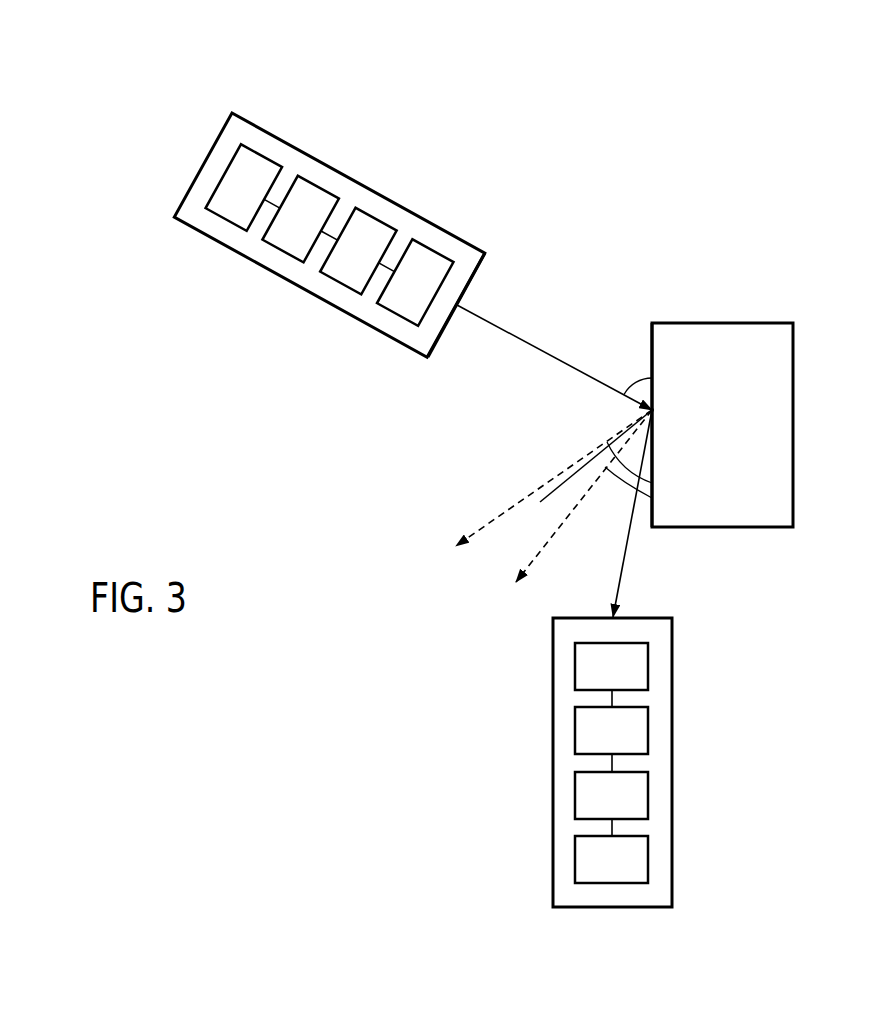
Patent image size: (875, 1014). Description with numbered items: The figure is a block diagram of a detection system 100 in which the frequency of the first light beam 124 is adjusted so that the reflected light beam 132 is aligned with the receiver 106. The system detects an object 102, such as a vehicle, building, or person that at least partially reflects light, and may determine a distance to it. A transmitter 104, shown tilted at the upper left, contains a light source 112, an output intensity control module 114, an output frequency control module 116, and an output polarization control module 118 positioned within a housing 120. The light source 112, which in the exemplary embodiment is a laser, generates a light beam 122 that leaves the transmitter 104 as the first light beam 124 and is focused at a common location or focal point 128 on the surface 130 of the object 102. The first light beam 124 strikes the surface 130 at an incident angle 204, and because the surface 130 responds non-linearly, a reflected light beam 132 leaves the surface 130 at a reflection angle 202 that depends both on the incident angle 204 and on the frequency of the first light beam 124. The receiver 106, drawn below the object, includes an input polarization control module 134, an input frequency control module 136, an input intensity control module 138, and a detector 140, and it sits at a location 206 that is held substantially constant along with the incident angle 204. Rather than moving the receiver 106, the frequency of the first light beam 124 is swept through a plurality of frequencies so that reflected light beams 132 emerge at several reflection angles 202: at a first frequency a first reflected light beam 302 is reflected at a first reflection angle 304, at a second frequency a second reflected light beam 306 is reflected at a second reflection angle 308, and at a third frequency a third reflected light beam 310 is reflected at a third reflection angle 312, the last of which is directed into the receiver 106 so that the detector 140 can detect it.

The detection system 100 is at (553, 65).
The object 102 is at (731, 323).
The transmitter 104 is at (348, 112).
The receiver 106 is at (718, 717).
The light source 112 is at (244, 187).
The output intensity control module 114 is at (300, 219).
The output frequency control module 116 is at (358, 251).
The output polarization control module 118 is at (415, 282).
The housing 120 is at (470, 243).
The light beam 122 is at (532, 290).
The first light beam 124 is at (528, 343).
The common location or focal point 128 is at (663, 406).
The surface 130 is at (650, 328).
The reflected light beam 132 is at (512, 453).
The input polarization control module 134 is at (594, 678).
The input frequency control module 136 is at (594, 743).
The input intensity control module 138 is at (594, 807).
The detector 140 is at (594, 872).
The reflection angle 202 is at (590, 413).
The incident angle 204 is at (634, 380).
The location 206 is at (718, 617).
The first reflected light beam 302 is at (500, 512).
The first reflection angle 304 is at (584, 470).
The second reflected light beam 306 is at (538, 555).
The second reflection angle 308 is at (614, 468).
The third reflected light beam 310 is at (622, 563).
The third reflection angle 312 is at (643, 500).